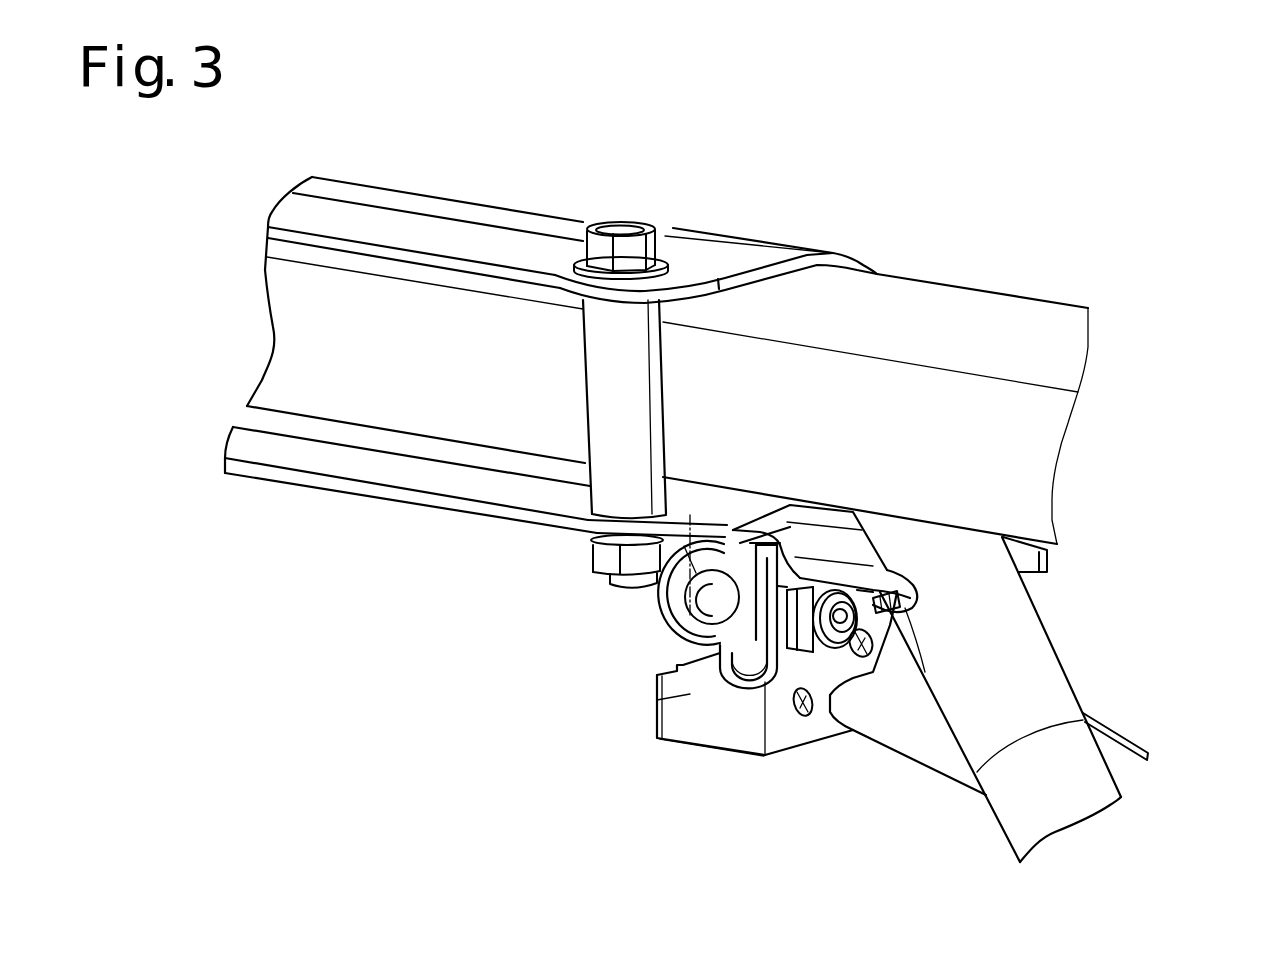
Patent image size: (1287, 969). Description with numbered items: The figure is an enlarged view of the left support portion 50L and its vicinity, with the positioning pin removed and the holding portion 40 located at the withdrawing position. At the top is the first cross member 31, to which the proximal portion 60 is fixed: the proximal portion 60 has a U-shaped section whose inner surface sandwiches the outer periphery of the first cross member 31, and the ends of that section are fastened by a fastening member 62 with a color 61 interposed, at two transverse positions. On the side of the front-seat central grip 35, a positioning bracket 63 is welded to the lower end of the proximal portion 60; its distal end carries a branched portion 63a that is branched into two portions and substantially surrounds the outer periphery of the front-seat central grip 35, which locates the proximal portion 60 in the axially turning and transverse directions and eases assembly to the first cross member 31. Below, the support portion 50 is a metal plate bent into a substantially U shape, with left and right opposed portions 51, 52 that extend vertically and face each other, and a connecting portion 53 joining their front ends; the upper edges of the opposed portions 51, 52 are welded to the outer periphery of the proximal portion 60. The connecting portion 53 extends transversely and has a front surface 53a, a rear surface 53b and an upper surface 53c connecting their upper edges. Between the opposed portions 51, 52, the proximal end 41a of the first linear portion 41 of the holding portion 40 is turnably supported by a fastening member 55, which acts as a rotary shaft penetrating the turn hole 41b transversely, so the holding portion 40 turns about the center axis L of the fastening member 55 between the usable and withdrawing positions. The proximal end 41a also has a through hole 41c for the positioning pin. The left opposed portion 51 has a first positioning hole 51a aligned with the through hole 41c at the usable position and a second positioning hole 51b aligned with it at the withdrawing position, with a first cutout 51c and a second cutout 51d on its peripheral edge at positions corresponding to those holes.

The first cross member 31 is at (962, 298).
The front-seat central grip 35 is at (1057, 672).
The holding portion 40 is at (1175, 733).
The first linear portion 41 is at (1127, 727).
The proximal end 41a is at (657, 700).
The turn hole 41b is at (655, 601).
The through hole 41c is at (870, 653).
The support portion 50 is at (792, 698).
The left support portion 50L is at (792, 698).
The left opposed portion 51 is at (891, 721).
The first positioning hole 51a is at (803, 717).
The second positioning hole 51b is at (867, 633).
The first cutout 51c is at (848, 672).
The second cutout 51d is at (888, 592).
The right opposed portion 52 is at (670, 633).
The connecting portion 53 is at (681, 674).
The front surface 53a is at (690, 737).
The rear surface 53b is at (748, 682).
The upper surface 53c is at (677, 642).
The fastening member 55 is at (865, 657).
The proximal portion 60 is at (728, 230).
The color (collar) 61 is at (577, 397).
The fastening member 62 is at (625, 222).
The positioning bracket 63 is at (840, 545).
The branched portion 63a is at (1048, 562).
The center axis L is at (691, 552).